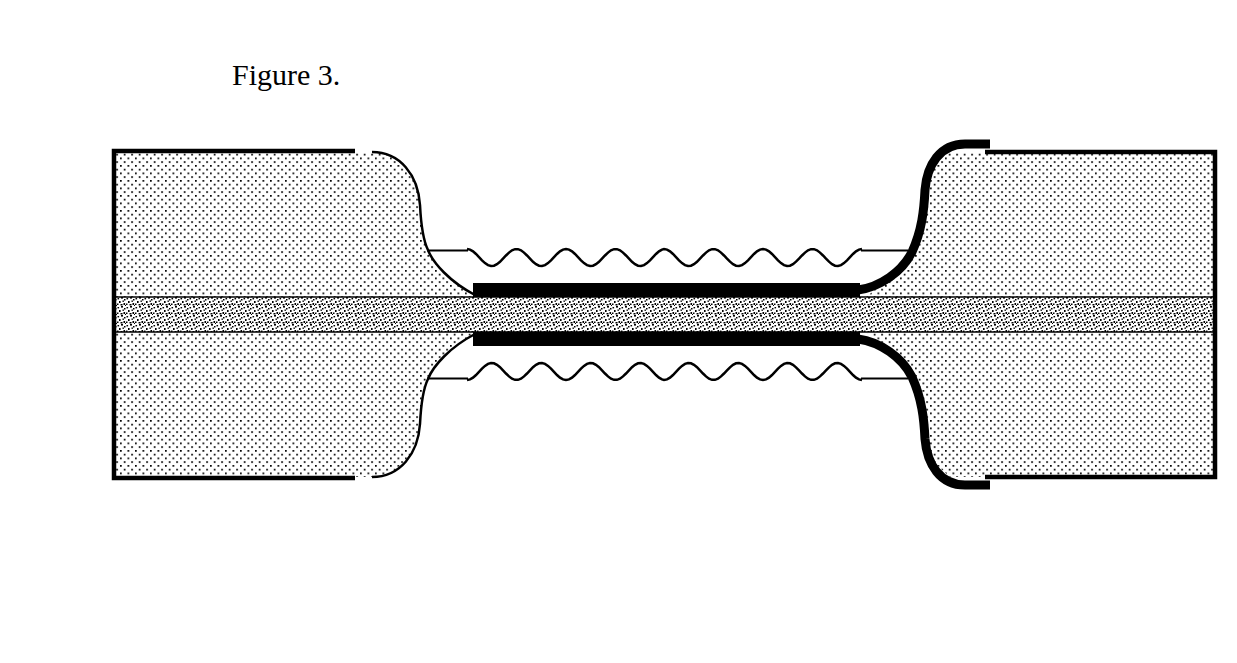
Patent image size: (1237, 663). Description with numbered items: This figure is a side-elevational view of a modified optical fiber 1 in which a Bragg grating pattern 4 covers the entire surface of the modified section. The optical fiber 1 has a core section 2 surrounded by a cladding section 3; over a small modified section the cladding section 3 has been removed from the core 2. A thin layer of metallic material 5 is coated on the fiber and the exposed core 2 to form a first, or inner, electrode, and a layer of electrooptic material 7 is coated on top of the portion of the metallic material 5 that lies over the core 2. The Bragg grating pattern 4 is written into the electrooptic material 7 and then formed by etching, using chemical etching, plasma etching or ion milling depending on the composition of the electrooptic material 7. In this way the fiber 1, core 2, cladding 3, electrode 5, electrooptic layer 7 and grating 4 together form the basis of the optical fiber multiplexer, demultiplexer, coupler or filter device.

The optical fiber 1 is at (1057, 150).
The core section 2 is at (823, 320).
The cladding section 3 is at (216, 420).
The Bragg grating pattern 4 is at (718, 248).
The metallic material 5 is at (518, 293).
The electrooptic material 7 is at (616, 269).